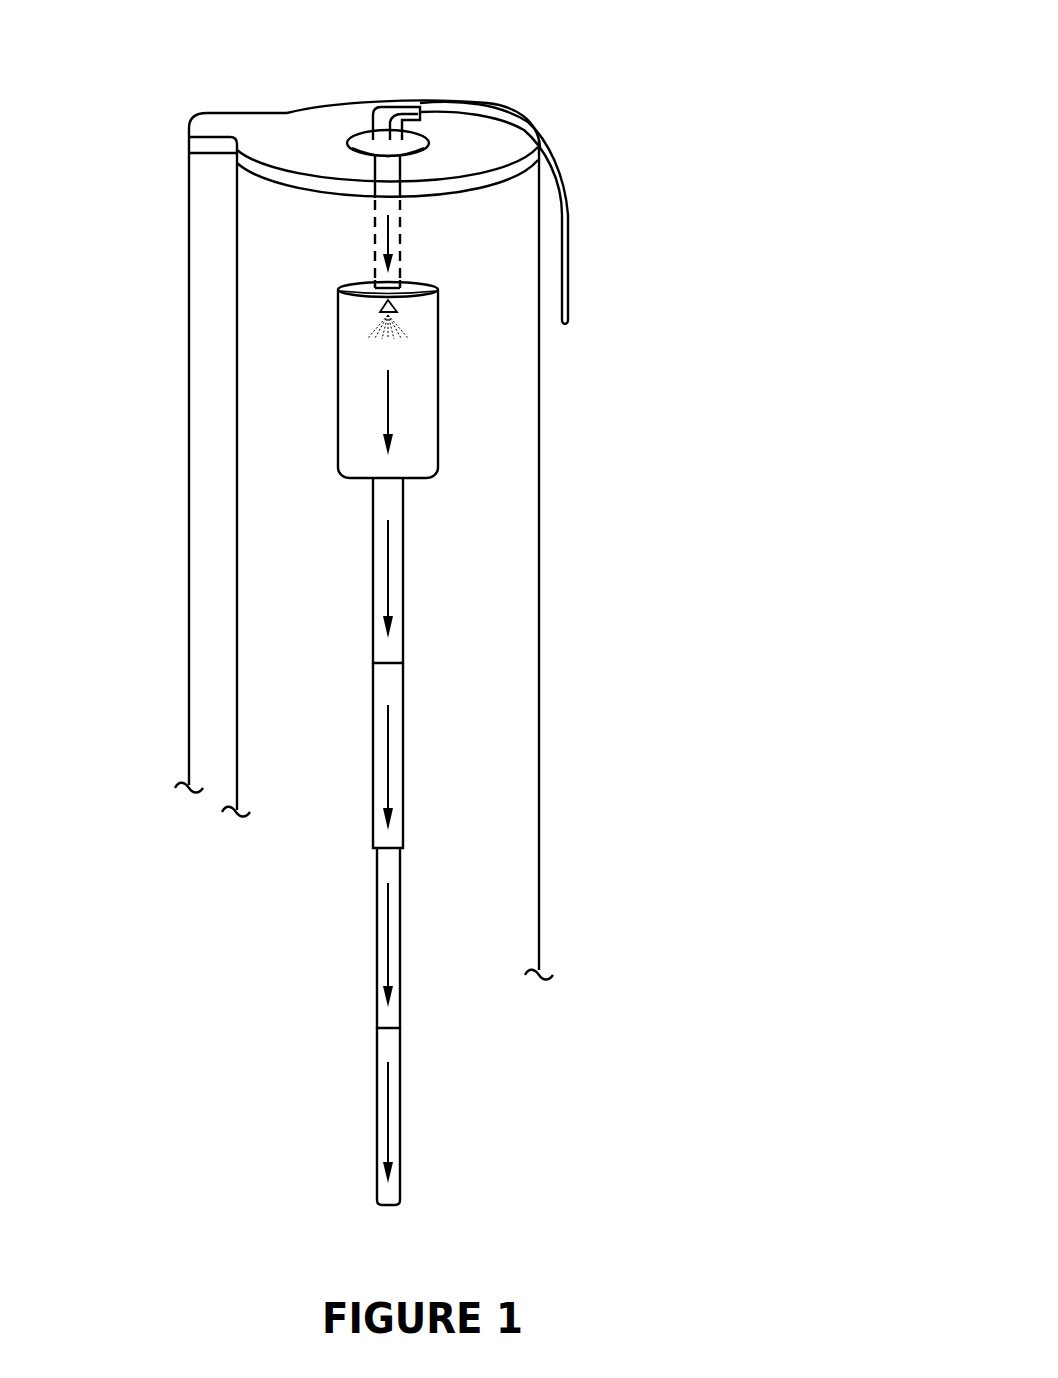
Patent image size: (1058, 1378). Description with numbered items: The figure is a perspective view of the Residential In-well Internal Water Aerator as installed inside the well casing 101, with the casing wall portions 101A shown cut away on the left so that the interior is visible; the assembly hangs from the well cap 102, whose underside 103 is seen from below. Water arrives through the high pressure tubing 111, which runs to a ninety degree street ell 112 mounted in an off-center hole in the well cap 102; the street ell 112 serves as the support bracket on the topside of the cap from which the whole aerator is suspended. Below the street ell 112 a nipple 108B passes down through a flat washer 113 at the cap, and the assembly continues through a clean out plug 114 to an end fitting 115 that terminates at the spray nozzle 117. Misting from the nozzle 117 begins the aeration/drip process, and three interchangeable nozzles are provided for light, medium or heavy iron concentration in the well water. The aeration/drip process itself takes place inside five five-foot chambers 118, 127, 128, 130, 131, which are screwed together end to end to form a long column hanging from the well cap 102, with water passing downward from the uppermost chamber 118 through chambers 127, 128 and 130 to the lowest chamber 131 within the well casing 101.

The well casing 101 is at (230, 559).
The support leg 101A is at (182, 435).
The well cap 102 is at (487, 101).
The cover plate underside 103 is at (358, 150).
The high pressure tubing 111 is at (513, 118).
The 90 degree street ell 112 is at (403, 100).
The flat washer 113 is at (430, 145).
The nipple 108B is at (412, 205).
The tube outlet end 115 is at (400, 282).
The clean out plug 114 is at (416, 290).
The nozzle 117 is at (414, 313).
The chamber 118 is at (445, 400).
The chamber 127 is at (415, 612).
The chamber 128 is at (417, 760).
The chamber 130 is at (409, 918).
The chamber 131 is at (414, 1105).